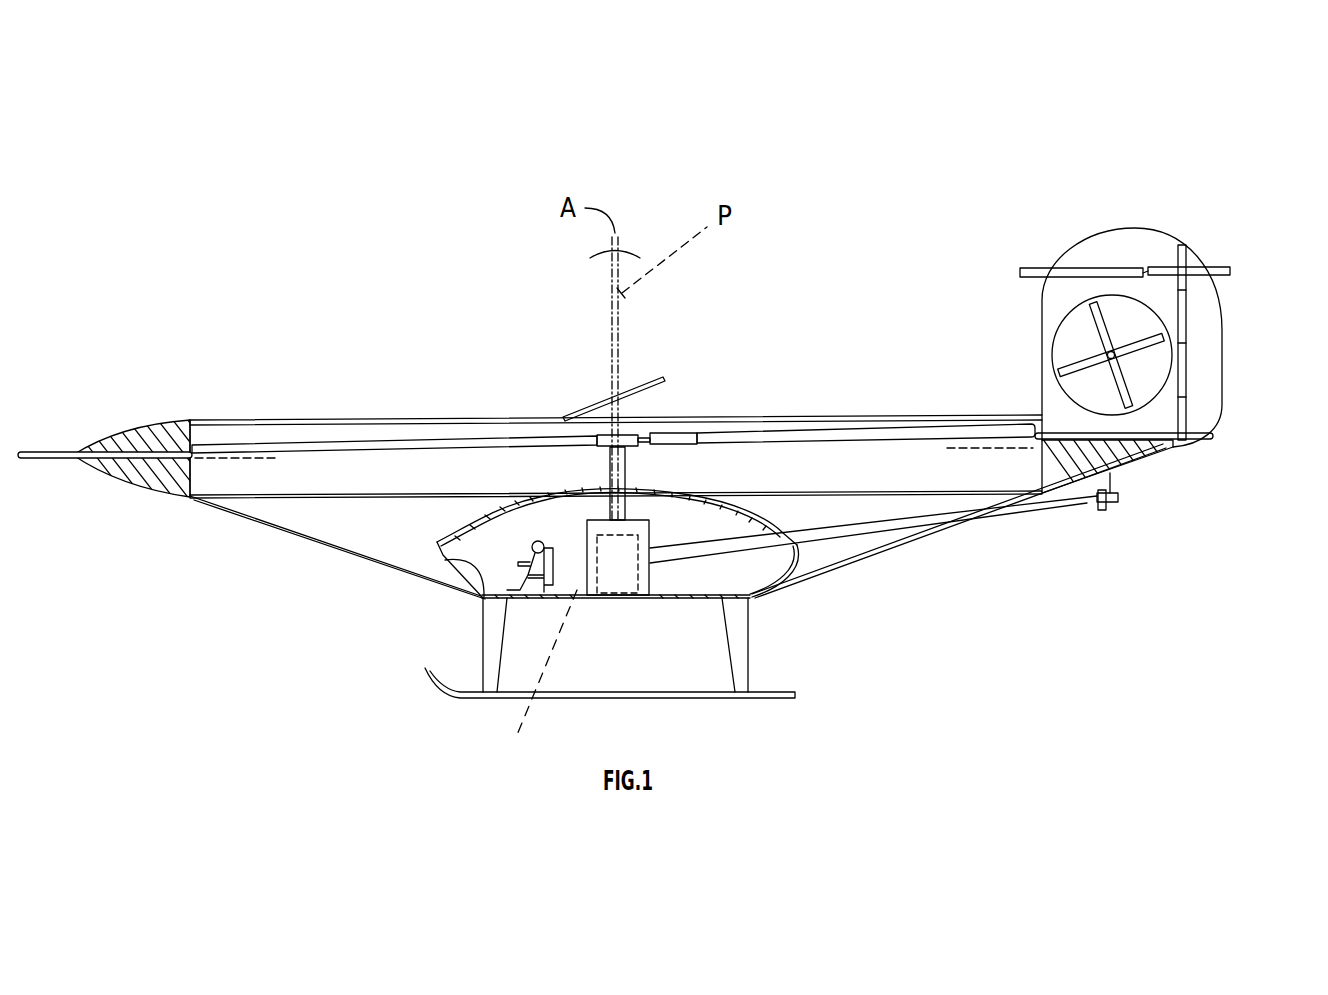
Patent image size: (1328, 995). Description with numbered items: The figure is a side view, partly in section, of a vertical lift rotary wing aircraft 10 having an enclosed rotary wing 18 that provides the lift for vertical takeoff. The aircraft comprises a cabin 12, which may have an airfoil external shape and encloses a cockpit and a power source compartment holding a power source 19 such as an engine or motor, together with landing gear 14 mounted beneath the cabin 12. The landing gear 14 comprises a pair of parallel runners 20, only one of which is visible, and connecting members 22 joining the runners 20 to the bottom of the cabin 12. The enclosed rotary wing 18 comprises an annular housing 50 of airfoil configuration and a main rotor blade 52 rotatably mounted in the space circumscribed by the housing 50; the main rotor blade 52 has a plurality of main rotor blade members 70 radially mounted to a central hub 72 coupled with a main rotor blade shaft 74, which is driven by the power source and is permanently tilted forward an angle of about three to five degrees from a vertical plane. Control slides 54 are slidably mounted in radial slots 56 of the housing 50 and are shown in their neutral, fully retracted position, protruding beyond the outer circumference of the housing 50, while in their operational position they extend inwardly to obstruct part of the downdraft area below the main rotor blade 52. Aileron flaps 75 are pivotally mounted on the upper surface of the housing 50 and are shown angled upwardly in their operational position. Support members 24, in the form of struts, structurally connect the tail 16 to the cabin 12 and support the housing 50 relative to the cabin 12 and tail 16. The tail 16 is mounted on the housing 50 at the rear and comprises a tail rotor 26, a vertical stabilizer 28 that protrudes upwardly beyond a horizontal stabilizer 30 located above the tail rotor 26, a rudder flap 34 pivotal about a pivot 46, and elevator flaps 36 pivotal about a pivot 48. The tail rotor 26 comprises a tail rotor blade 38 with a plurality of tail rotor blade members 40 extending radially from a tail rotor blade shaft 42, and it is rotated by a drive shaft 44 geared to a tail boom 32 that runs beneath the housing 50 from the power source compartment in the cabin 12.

The vertical lift rotary wing aircraft 10 is at (851, 204).
The cabin 12 is at (738, 502).
The landing gear 14 is at (758, 648).
The tail 16 is at (1210, 251).
The enclosed rotary wing 18 is at (323, 416).
The power source 19 is at (536, 683).
The runners 20 is at (783, 698).
The connecting members 22 is at (482, 622).
The support members 24 is at (277, 533).
The tail rotor 26 is at (1066, 340).
The vertical stabilizer 28 is at (1135, 243).
The horizontal stabilizer 30 is at (1072, 267).
The tail boom 32 is at (1027, 510).
The rudder flap 34 is at (1207, 408).
The elevator flaps 36 is at (1217, 263).
The tail rotor blade 38 is at (1091, 318).
The tail rotor blade members 40 is at (1127, 392).
The tail rotor blade shaft 42 is at (1117, 340).
The drive shaft 44 is at (1117, 477).
The pivot 46 is at (1186, 330).
The pivot 48 is at (1148, 265).
The housing 50 is at (165, 418).
The main rotor blade 52 is at (454, 434).
The control slides 54 is at (40, 452).
The radial slot 56 is at (99, 455).
The main rotor blade members 70 is at (283, 440).
The central hub 72 is at (638, 433).
The main rotor blade shaft 74 is at (627, 480).
The aileron flaps 75 is at (590, 407).